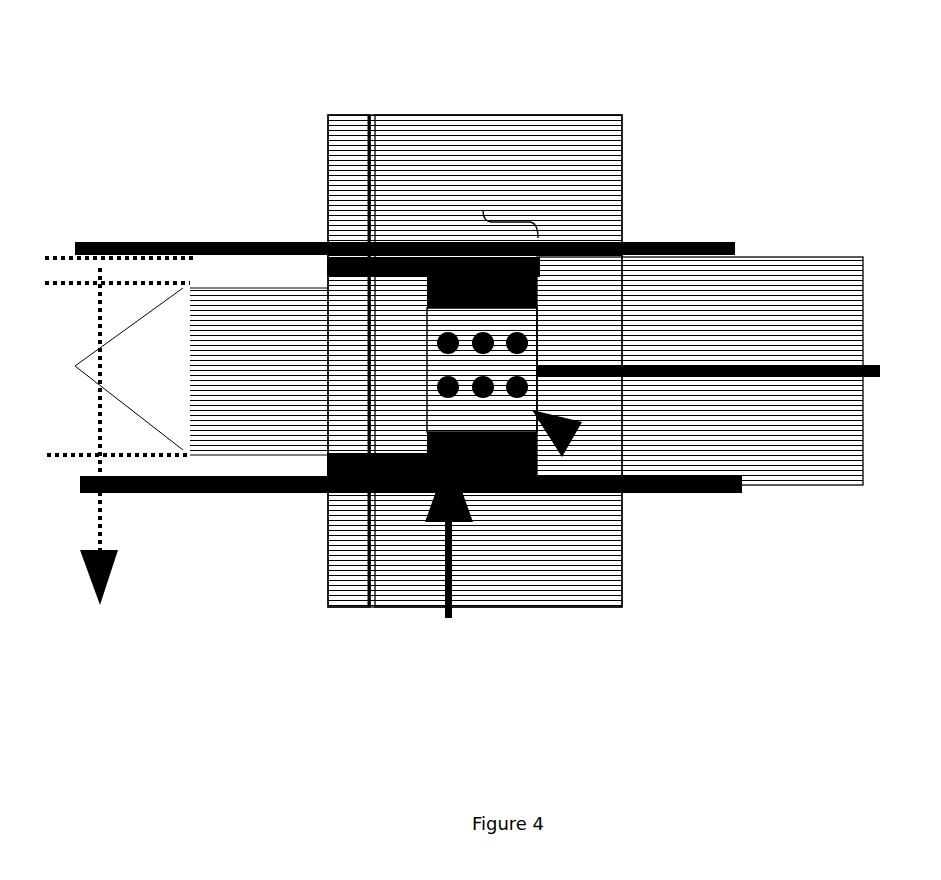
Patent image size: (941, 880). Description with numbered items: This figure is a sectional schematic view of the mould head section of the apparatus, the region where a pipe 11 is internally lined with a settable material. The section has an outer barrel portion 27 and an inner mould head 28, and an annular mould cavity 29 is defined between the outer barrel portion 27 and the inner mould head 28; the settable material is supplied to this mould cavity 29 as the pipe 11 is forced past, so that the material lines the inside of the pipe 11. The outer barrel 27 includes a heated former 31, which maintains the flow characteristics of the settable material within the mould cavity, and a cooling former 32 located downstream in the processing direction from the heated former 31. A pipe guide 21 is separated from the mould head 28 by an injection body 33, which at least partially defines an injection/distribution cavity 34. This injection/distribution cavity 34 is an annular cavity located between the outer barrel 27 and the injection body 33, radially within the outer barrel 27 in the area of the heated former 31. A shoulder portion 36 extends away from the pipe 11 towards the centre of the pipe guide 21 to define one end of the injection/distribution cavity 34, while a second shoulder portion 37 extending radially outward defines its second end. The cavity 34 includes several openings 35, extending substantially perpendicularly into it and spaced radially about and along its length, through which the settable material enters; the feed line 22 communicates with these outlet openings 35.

The pipe 11 is at (727, 245).
The pipe guide 21 is at (805, 288).
The feed line 22 is at (878, 362).
The outer barrel portion 27 is at (328, 68).
The inner mould head 28 is at (205, 318).
The annular mould cavity 29 is at (483, 210).
The heated former 31 is at (623, 107).
The cooling former 32 is at (328, 107).
The injection body 33 is at (572, 440).
The injection/distribution cavity 34 is at (483, 210).
The openings 35 is at (446, 393).
The shoulder portion 36 is at (565, 245).
The second shoulder portion 37 is at (538, 448).